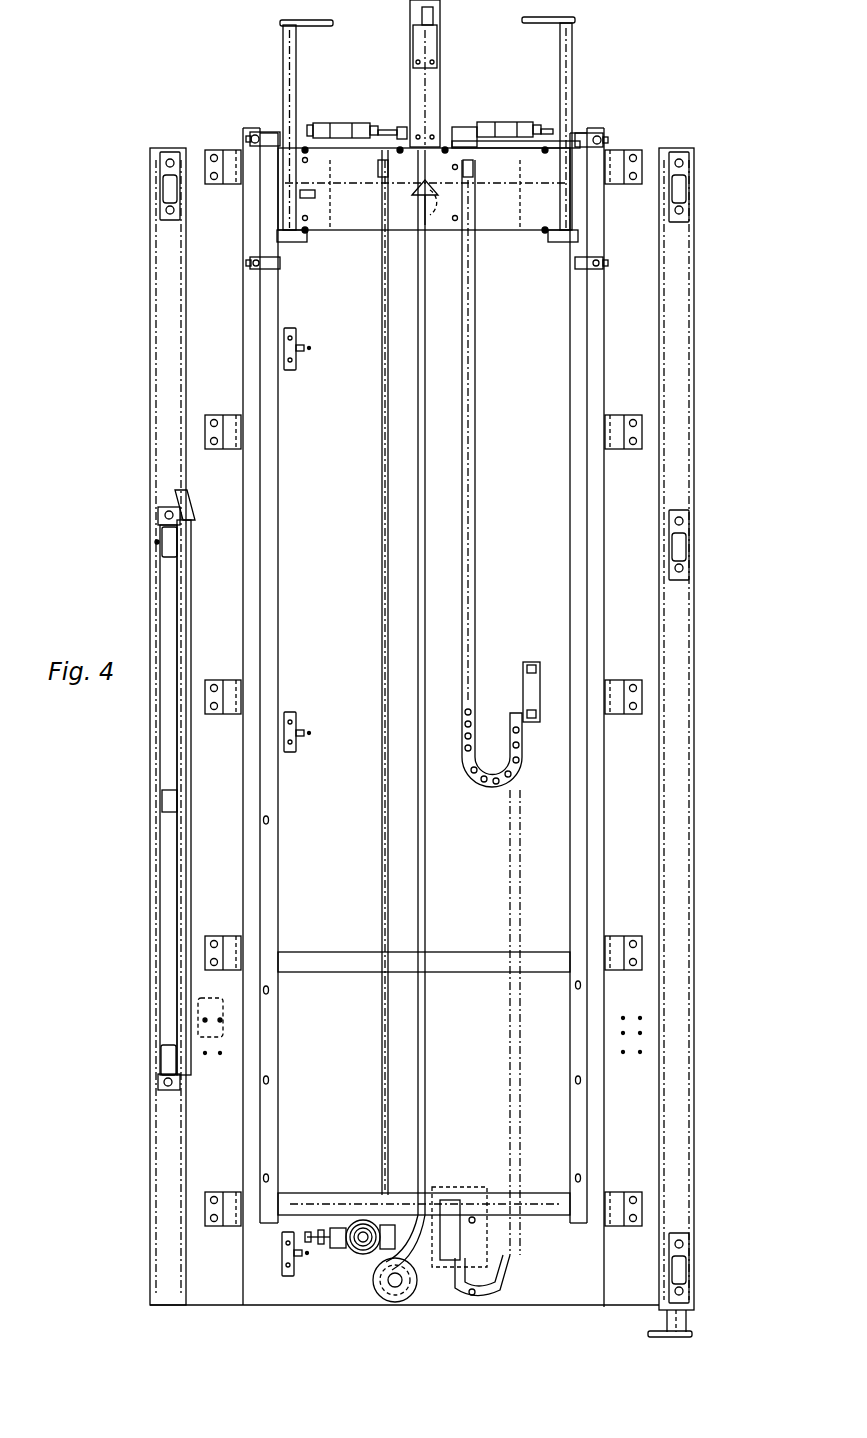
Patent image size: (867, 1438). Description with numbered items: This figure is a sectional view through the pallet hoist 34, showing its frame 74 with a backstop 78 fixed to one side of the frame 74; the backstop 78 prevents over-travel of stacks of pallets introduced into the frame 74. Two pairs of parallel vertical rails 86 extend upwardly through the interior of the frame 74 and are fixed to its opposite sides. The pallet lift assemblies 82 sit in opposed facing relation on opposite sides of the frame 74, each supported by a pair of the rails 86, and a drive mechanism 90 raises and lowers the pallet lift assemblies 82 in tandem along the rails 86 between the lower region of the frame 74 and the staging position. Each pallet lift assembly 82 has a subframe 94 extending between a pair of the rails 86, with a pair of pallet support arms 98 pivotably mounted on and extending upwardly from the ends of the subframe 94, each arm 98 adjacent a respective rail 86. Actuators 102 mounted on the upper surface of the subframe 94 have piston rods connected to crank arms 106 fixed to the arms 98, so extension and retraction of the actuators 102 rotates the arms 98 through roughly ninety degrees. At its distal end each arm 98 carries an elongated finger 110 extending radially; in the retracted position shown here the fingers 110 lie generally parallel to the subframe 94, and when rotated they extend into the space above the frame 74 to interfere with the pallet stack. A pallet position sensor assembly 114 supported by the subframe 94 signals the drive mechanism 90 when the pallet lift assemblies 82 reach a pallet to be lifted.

The pallet hoist 34 is at (720, 466).
The frame 74 is at (683, 618).
The backstop 78 is at (185, 645).
The pallet lift assembly 82 is at (637, 111).
The vertical rail 86 is at (283, 618).
The drive mechanism 90 is at (365, 1173).
The subframe 94 is at (513, 222).
The pallet support arm 98 is at (296, 84).
The actuator 102 is at (349, 122).
The crank arm 106 is at (281, 130).
The finger 110 is at (330, 27).
The pallet position sensor assembly 114 is at (440, 15).